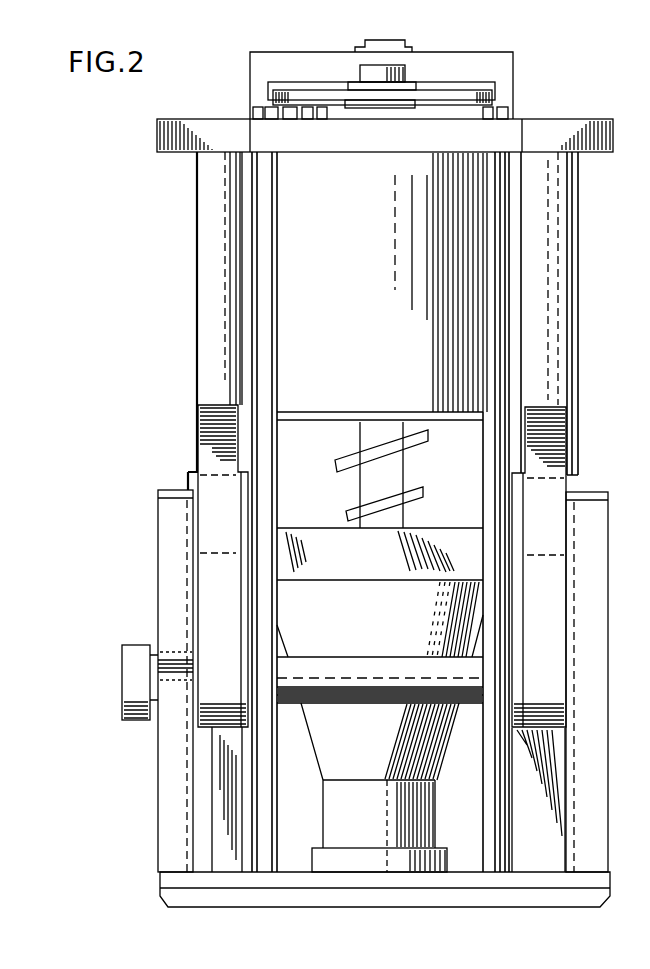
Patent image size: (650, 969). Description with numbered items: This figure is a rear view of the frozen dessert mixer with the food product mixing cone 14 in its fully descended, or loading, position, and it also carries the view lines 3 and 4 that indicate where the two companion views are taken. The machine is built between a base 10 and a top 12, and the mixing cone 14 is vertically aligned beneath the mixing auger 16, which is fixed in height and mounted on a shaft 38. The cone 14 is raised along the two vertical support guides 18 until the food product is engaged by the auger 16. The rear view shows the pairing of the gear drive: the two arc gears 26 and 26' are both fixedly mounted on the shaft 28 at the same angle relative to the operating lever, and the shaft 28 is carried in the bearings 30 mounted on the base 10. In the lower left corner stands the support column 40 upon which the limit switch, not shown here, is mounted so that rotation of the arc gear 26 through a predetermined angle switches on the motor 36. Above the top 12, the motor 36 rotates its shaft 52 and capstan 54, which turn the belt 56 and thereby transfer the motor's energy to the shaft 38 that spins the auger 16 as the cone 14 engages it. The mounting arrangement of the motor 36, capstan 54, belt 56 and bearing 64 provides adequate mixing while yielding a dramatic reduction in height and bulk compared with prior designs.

The view line for FIG. 3 is at (422, 917).
The view line for FIG. 4 is at (245, 782).
The base 10 is at (165, 882).
The top 12 is at (157, 137).
The food product mixing cone 14 is at (330, 750).
The mixing auger 16 is at (398, 470).
The vertical guides 18 is at (207, 250).
The arc gear 26 is at (200, 566).
The arc gear 26' is at (574, 567).
The shaft 28 is at (457, 680).
The bearing 30 is at (170, 768).
The motor 36 is at (473, 208).
The shaft 38 is at (368, 43).
The support column 40 is at (228, 827).
The shaft 52 is at (407, 70).
The capstan 54 is at (440, 83).
The belt 56 is at (497, 100).
The bearing 64 is at (252, 68).